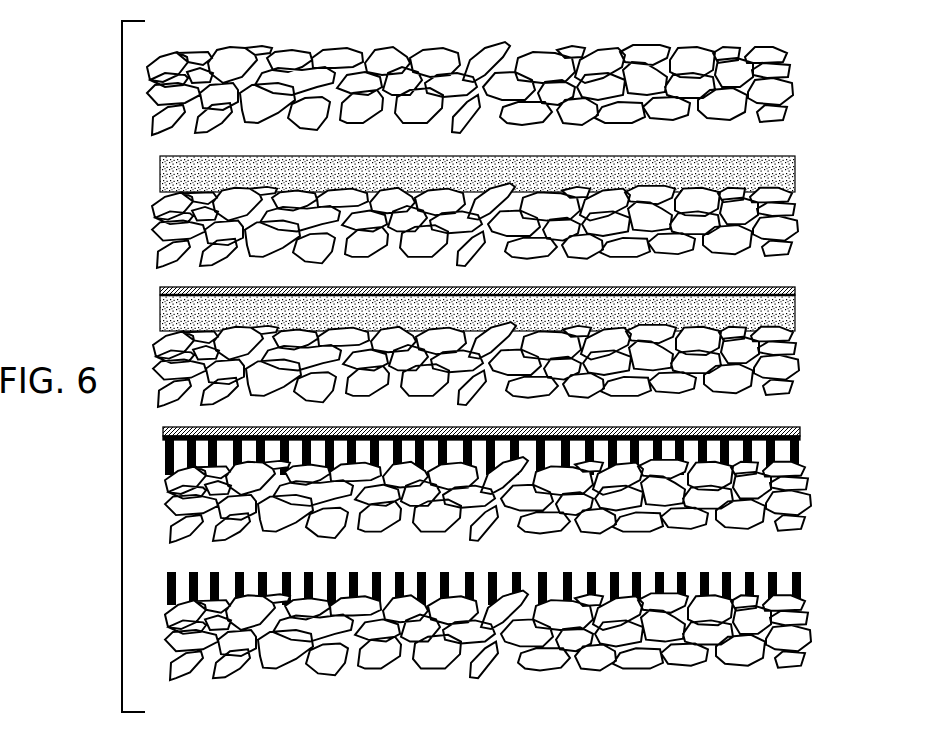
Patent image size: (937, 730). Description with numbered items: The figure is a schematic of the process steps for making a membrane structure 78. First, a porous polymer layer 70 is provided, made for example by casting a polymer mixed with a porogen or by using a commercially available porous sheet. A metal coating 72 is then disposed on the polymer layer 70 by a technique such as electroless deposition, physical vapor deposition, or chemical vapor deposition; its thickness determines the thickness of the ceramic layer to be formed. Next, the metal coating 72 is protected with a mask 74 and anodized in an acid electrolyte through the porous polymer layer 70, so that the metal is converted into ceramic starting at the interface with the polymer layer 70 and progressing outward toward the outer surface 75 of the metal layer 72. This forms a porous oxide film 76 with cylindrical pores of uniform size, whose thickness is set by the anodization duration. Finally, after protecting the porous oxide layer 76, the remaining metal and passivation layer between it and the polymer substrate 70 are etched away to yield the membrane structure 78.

The porous polymer layer 70 is at (800, 47).
The metal coating 72 is at (795, 163).
The mask 74 is at (795, 285).
The outer surface 75 is at (797, 293).
The porous oxide film 76 is at (803, 453).
The membrane structure 78 is at (822, 570).